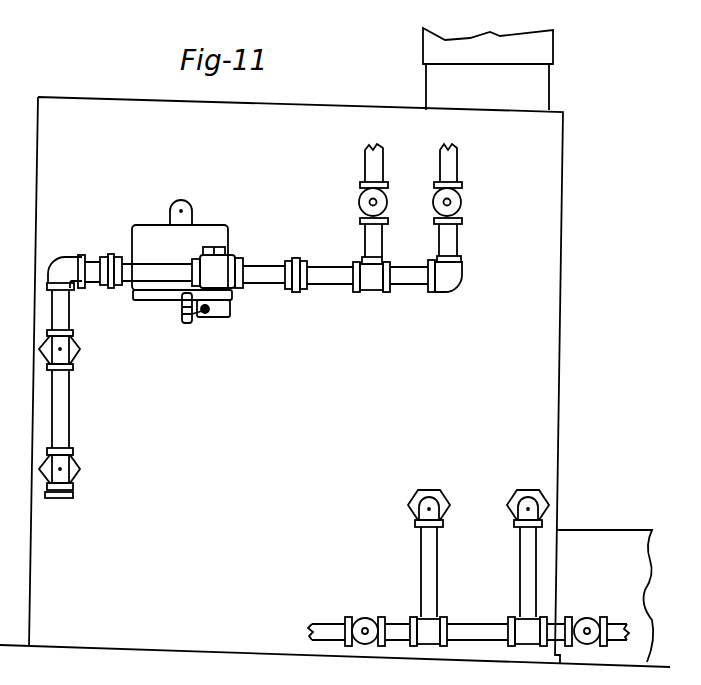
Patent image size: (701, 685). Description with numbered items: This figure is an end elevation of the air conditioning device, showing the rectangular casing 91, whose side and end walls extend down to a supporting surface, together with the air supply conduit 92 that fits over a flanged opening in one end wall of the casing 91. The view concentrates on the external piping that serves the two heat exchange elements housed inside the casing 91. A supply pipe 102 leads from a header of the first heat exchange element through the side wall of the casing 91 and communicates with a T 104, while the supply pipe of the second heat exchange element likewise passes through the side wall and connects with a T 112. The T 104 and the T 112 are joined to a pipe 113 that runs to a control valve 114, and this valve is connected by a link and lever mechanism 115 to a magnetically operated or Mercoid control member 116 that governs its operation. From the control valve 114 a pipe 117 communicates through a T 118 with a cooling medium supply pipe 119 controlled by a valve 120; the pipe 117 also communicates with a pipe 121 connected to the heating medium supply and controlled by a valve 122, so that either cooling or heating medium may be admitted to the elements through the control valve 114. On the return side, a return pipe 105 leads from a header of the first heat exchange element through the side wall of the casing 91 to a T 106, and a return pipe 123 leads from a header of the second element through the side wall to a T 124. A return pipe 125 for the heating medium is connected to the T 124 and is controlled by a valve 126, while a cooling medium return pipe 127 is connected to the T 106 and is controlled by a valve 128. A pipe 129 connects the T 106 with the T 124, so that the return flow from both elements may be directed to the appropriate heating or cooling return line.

The casing 91 is at (545, 397).
The air supply conduit 92 is at (583, 531).
The supply pipe 102 is at (76, 350).
The T 104 is at (62, 359).
The return pipe 105 is at (520, 547).
The T 106 is at (524, 628).
The T 112 is at (66, 464).
The pipe 113 is at (62, 303).
The control valve 114 is at (216, 267).
The link and lever mechanism 115 is at (193, 310).
The magnetically operated or Mercoid control member 116 is at (204, 232).
The pipe 117 is at (320, 282).
The T 118 is at (367, 287).
The cooling medium supply pipe 119 is at (378, 235).
The valve 120 is at (384, 200).
The pipe 121 is at (452, 238).
The valve 122 is at (460, 199).
The return pipe 123 is at (430, 546).
The T 124 is at (436, 626).
The return pipe for the heating medium 125 is at (320, 627).
The valve 126 is at (360, 620).
The cooling medium return pipe 127 is at (558, 627).
The valve 128 is at (589, 628).
The pipe 129 is at (457, 640).